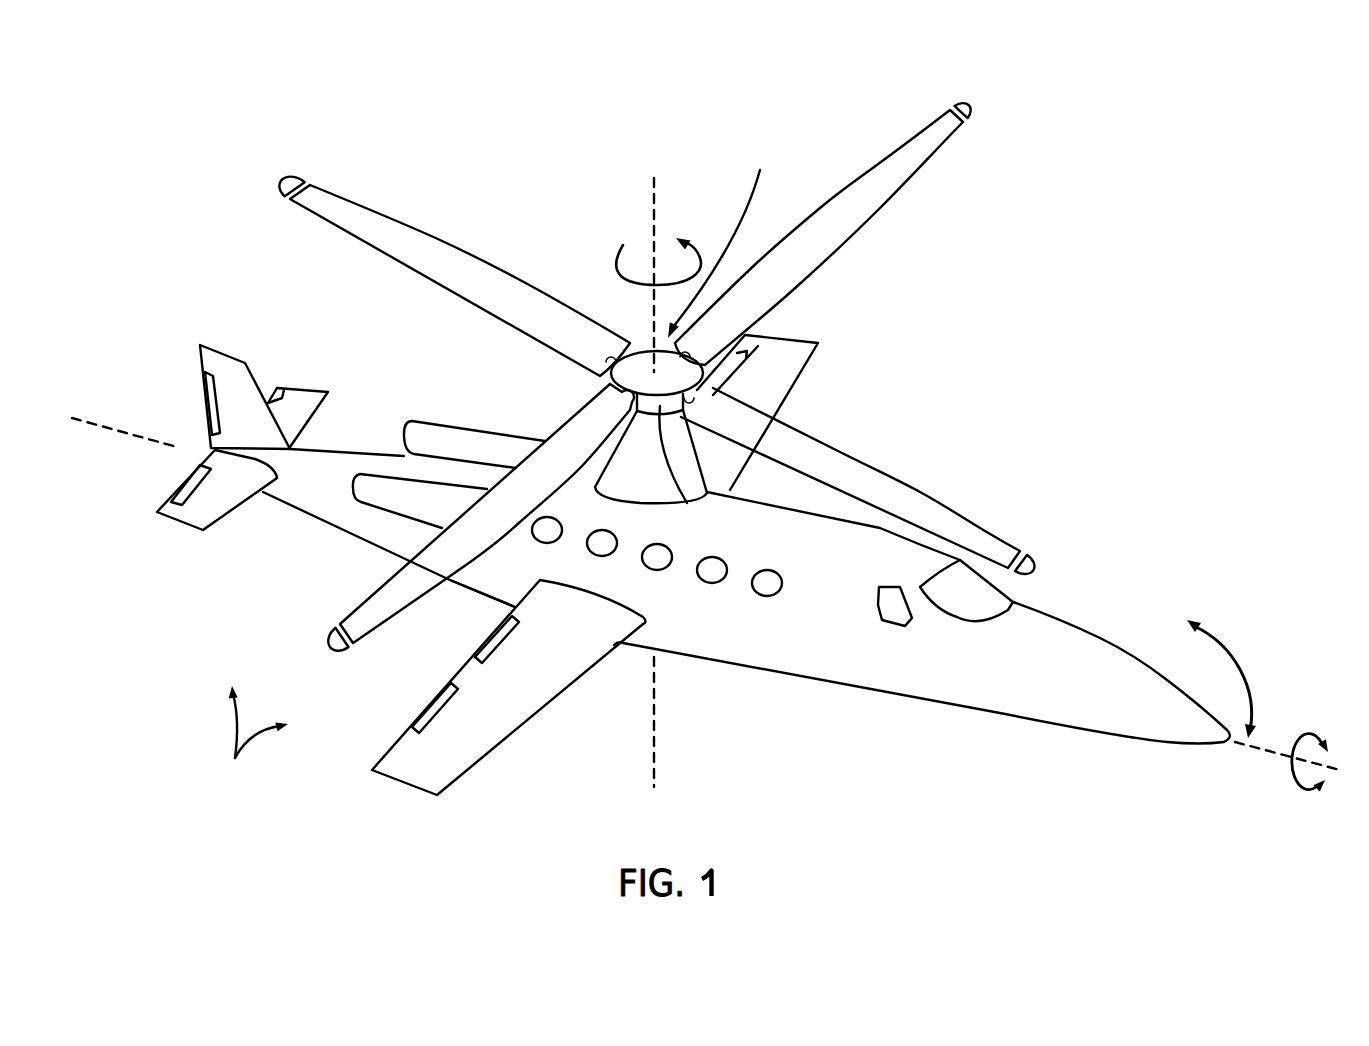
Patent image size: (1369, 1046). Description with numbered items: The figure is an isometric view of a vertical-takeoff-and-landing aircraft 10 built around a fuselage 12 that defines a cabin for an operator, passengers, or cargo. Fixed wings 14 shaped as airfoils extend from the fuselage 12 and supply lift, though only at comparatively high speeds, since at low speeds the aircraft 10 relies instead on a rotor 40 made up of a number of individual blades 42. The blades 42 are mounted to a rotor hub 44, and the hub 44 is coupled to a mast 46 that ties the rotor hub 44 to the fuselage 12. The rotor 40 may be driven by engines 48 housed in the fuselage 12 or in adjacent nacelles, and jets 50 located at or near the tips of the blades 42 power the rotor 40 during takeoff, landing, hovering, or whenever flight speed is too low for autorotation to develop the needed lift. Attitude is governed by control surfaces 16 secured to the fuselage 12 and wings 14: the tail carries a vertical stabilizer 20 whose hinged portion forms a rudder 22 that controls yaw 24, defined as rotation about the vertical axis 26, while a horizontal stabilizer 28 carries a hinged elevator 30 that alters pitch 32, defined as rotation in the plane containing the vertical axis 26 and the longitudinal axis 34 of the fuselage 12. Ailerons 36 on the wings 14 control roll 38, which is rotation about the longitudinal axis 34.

The aircraft 10 is at (1043, 351).
The fuselage 12 is at (815, 663).
The fixed wings 14 is at (528, 720).
The control surfaces 16 is at (252, 741).
The vertical stabilizer 20 is at (227, 370).
The rudder 22 is at (205, 403).
The yaw 24 is at (613, 258).
The vertical axis 26 is at (655, 196).
The horizontal stabilizer 28 is at (217, 500).
The elevator 30 is at (188, 486).
The pitch 32 is at (1240, 662).
The longitudinal axis 34 is at (1270, 750).
The ailerons 36 is at (495, 633).
The roll 38 is at (1307, 787).
The rotor 40 is at (720, 239).
The blades 42 is at (425, 243).
The rotor hub 44 is at (683, 505).
The mast 46 is at (647, 470).
The engines 48 is at (457, 438).
The jets 50 is at (303, 184).